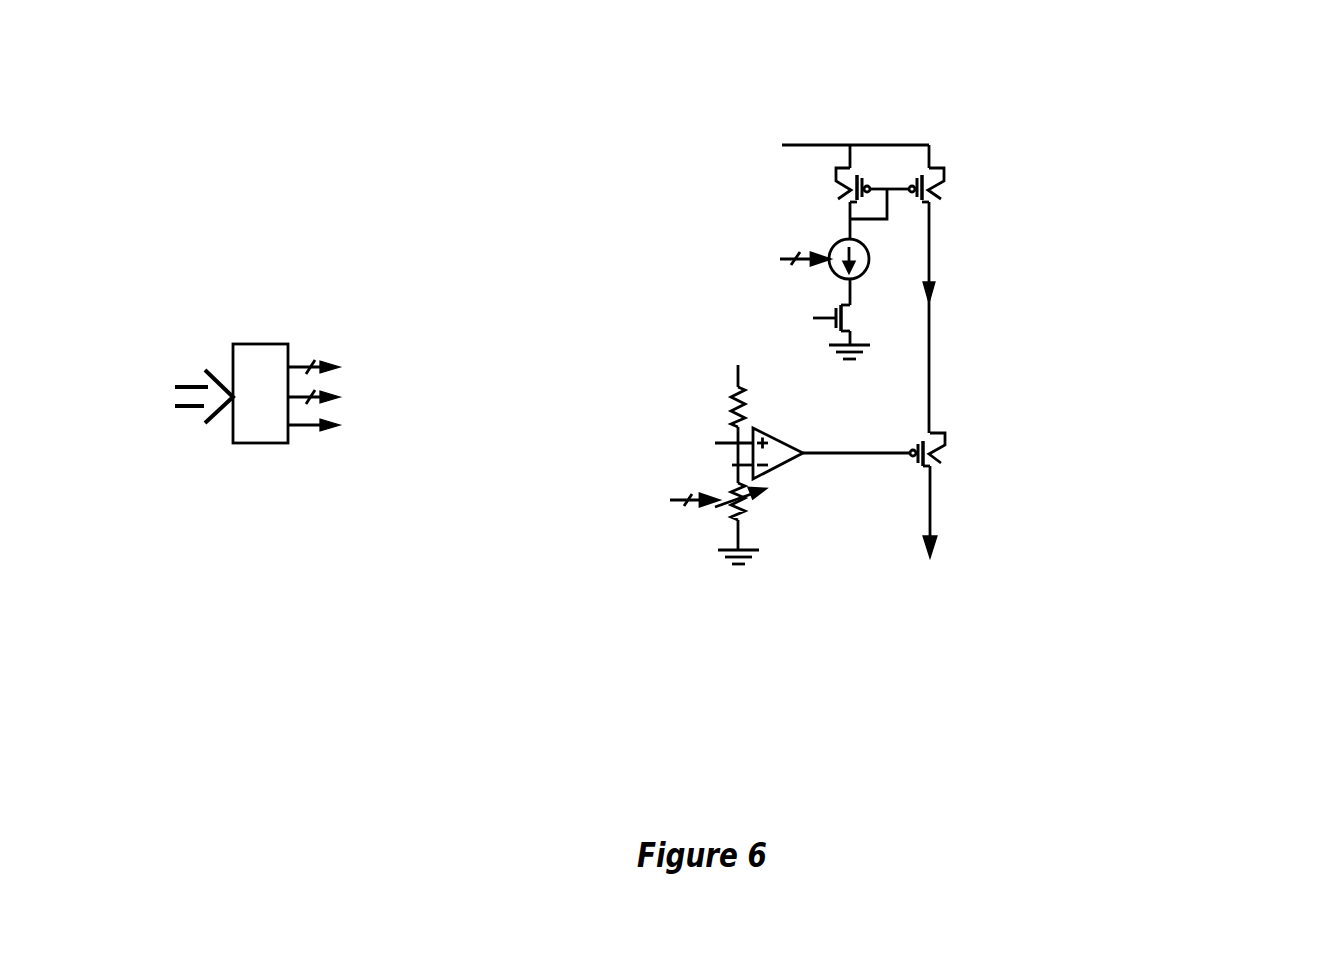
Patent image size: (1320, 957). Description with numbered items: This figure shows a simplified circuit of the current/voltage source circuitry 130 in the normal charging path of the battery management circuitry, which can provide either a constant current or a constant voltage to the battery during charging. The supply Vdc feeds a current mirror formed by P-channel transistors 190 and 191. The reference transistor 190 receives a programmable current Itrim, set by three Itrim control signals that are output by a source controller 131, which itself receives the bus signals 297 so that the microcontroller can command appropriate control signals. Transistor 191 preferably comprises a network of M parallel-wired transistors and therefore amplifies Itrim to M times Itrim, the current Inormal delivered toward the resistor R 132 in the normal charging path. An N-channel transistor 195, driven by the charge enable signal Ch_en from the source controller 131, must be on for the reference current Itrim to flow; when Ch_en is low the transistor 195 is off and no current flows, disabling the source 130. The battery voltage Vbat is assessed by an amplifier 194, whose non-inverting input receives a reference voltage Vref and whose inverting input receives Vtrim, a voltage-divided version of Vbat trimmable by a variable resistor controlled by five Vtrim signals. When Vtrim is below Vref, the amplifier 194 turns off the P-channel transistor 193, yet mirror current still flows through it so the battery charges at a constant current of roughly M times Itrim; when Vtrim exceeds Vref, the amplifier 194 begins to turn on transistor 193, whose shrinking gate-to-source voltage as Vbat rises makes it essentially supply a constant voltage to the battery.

The current/voltage source circuitry 130 is at (1085, 90).
The source controller 131 is at (343, 393).
The bus signals 297 is at (200, 400).
The reference transistor 190 is at (841, 185).
The P-channel transistor 191 is at (968, 185).
The P-channel transistor 193 is at (980, 449).
The amplifier 194 is at (783, 452).
The N-channel transistor 195 is at (816, 332).
The resistor R 132 is at (930, 562).